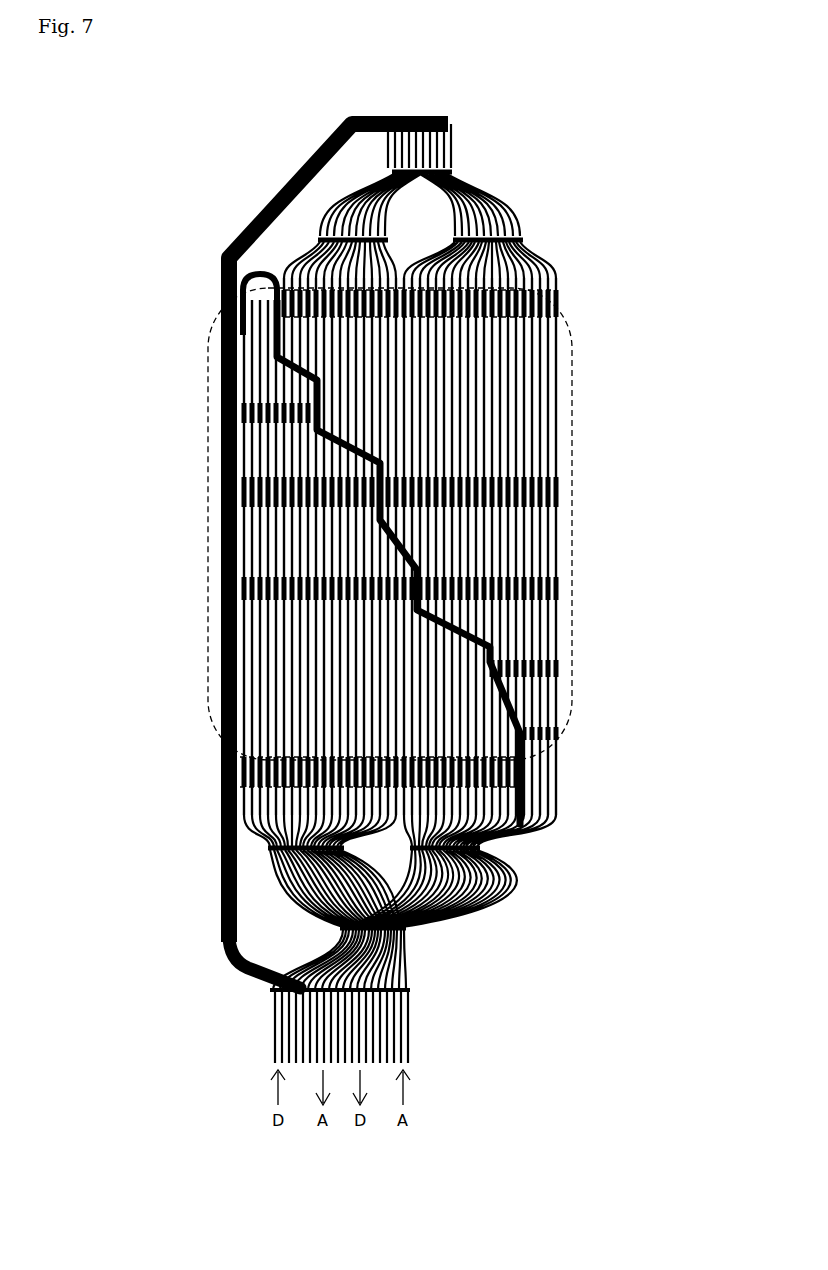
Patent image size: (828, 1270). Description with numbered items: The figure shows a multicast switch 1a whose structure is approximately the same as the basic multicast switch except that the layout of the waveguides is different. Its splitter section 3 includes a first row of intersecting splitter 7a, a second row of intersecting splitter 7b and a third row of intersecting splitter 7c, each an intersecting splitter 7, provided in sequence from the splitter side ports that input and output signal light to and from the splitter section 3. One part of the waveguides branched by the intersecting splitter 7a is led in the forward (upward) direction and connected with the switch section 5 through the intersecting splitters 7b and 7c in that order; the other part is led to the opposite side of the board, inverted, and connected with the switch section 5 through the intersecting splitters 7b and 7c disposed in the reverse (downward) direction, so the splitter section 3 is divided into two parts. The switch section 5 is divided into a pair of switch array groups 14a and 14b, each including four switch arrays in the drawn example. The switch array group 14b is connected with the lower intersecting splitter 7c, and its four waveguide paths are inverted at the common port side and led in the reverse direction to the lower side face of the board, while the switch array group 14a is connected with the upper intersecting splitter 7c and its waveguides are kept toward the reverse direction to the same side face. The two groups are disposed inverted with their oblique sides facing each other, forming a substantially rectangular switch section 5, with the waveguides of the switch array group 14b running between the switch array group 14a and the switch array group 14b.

The multicast switch 1a is at (501, 143).
The splitter section 3 is at (602, 300).
The switch section 5 is at (582, 330).
The intersecting splitter 7 is at (294, 568).
The first row of intersecting splitter 7a is at (256, 1002).
The second row of intersecting splitter 7b is at (370, 160).
The third row of intersecting splitter 7c is at (303, 233).
The switch array group 14a is at (569, 420).
The switch array group 14b is at (540, 772).